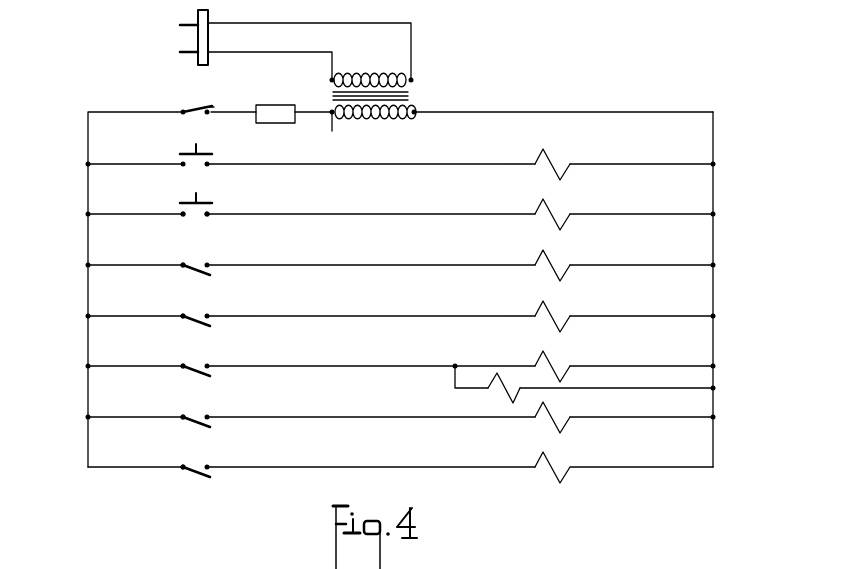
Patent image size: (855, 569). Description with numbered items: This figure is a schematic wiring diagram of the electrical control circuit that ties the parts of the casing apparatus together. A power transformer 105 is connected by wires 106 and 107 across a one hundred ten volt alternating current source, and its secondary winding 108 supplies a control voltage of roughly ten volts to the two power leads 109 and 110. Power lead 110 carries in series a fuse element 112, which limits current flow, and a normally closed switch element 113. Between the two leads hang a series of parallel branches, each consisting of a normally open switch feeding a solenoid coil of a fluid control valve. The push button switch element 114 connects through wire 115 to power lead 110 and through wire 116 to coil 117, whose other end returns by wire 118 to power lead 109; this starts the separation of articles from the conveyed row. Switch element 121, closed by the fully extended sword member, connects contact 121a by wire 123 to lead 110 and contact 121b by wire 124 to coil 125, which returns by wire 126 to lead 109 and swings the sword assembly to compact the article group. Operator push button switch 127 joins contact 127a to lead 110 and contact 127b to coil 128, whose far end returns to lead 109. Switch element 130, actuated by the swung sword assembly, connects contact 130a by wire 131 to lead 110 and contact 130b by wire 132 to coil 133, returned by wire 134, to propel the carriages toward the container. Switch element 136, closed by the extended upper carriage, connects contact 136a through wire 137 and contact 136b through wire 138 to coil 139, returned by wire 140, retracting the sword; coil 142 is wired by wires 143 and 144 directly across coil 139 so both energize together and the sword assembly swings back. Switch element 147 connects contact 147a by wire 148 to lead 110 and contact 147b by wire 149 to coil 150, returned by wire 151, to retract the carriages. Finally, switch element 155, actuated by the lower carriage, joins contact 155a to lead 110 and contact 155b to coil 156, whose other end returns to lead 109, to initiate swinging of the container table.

The power transformer 105 is at (408, 96).
The wire 106 is at (302, 53).
The wire 107 is at (411, 37).
The secondary winding 108 is at (378, 115).
The power lead 109 is at (713, 142).
The power lead 110 is at (88, 150).
The fuse element 112 is at (290, 91).
The normally closed switch element 113 is at (211, 105).
The switch element 114 is at (204, 146).
The wire 115 is at (122, 165).
The wire 116 is at (411, 164).
The coil 117 is at (548, 161).
The wire 118 is at (636, 164).
The switch element 121 is at (215, 265).
The contact 121a is at (185, 271).
The contact 121b is at (211, 275).
The wire 123 is at (108, 268).
The wire 124 is at (400, 265).
The coil 125 is at (548, 262).
The wire 126 is at (636, 265).
The switch element 127 is at (200, 200).
The contact 127a is at (183, 217).
The contact 127b is at (207, 217).
The coil 128 is at (548, 211).
The switch element 130 is at (203, 314).
The contact 130a is at (185, 320).
The contact 130b is at (211, 326).
The wire 131 is at (112, 318).
The wire 132 is at (402, 316).
The coil 133 is at (548, 313).
The wire 134 is at (642, 316).
The switch element 136 is at (203, 364).
The contact 136a is at (185, 370).
The contact 136b is at (211, 376).
The wire 137 is at (112, 368).
The wire 138 is at (368, 366).
The coil 139 is at (548, 363).
The wire 140 is at (640, 366).
The coil 142 is at (499, 380).
The wire 143 is at (455, 384).
The wire 144 is at (616, 379).
The switch element 147 is at (198, 414).
The contact 147a is at (185, 421).
The contact 147b is at (211, 427).
The wire 148 is at (130, 417).
The wire 149 is at (342, 417).
The coil 150 is at (548, 414).
The wire 151 is at (642, 417).
The switch element 155 is at (203, 465).
The contact 155a is at (185, 471).
The contact 155b is at (211, 477).
The coil 156 is at (548, 464).